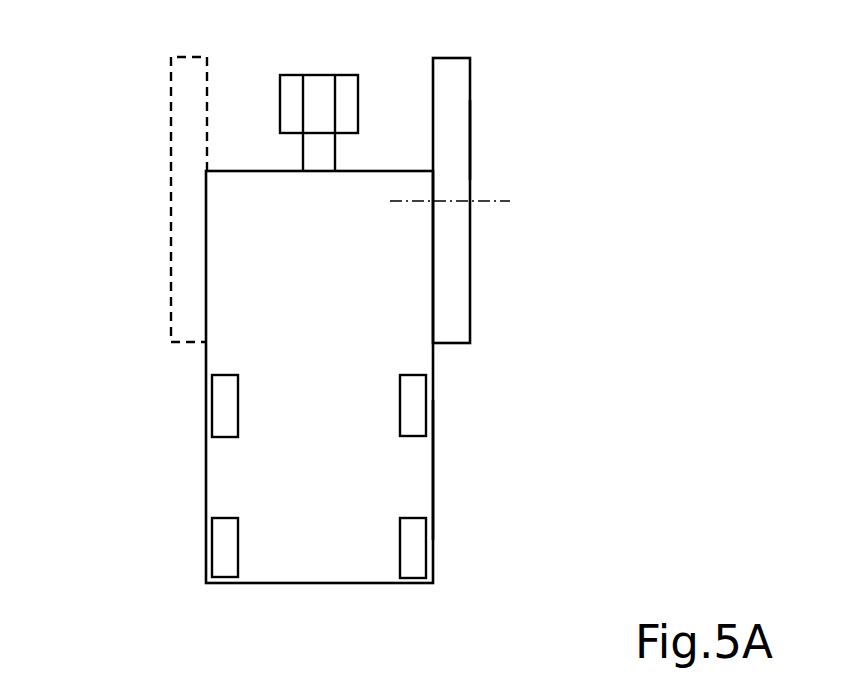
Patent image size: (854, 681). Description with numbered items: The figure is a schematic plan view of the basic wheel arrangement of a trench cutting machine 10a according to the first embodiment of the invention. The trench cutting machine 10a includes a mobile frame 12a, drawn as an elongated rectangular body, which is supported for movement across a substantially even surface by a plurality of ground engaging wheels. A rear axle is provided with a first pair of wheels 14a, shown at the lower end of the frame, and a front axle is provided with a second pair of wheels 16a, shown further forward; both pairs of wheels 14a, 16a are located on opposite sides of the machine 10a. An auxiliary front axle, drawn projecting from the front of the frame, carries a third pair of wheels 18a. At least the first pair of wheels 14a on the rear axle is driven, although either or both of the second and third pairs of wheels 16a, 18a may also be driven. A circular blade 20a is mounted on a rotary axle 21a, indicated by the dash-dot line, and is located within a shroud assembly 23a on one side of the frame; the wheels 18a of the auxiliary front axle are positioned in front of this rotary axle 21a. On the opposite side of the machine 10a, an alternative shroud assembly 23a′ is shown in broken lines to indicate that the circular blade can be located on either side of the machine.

The trench cutting machine 10a is at (350, 457).
The mobile frame 12a is at (433, 468).
The first pair of wheels 14a is at (220, 552).
The second pair of wheels 16a is at (225, 403).
The third pair of wheels 18a is at (348, 82).
The circular blade 20a is at (457, 92).
The rotary axle 21a is at (485, 201).
The shroud assembly 23a is at (472, 137).
The alternative shroud assembly 23a′ is at (168, 127).